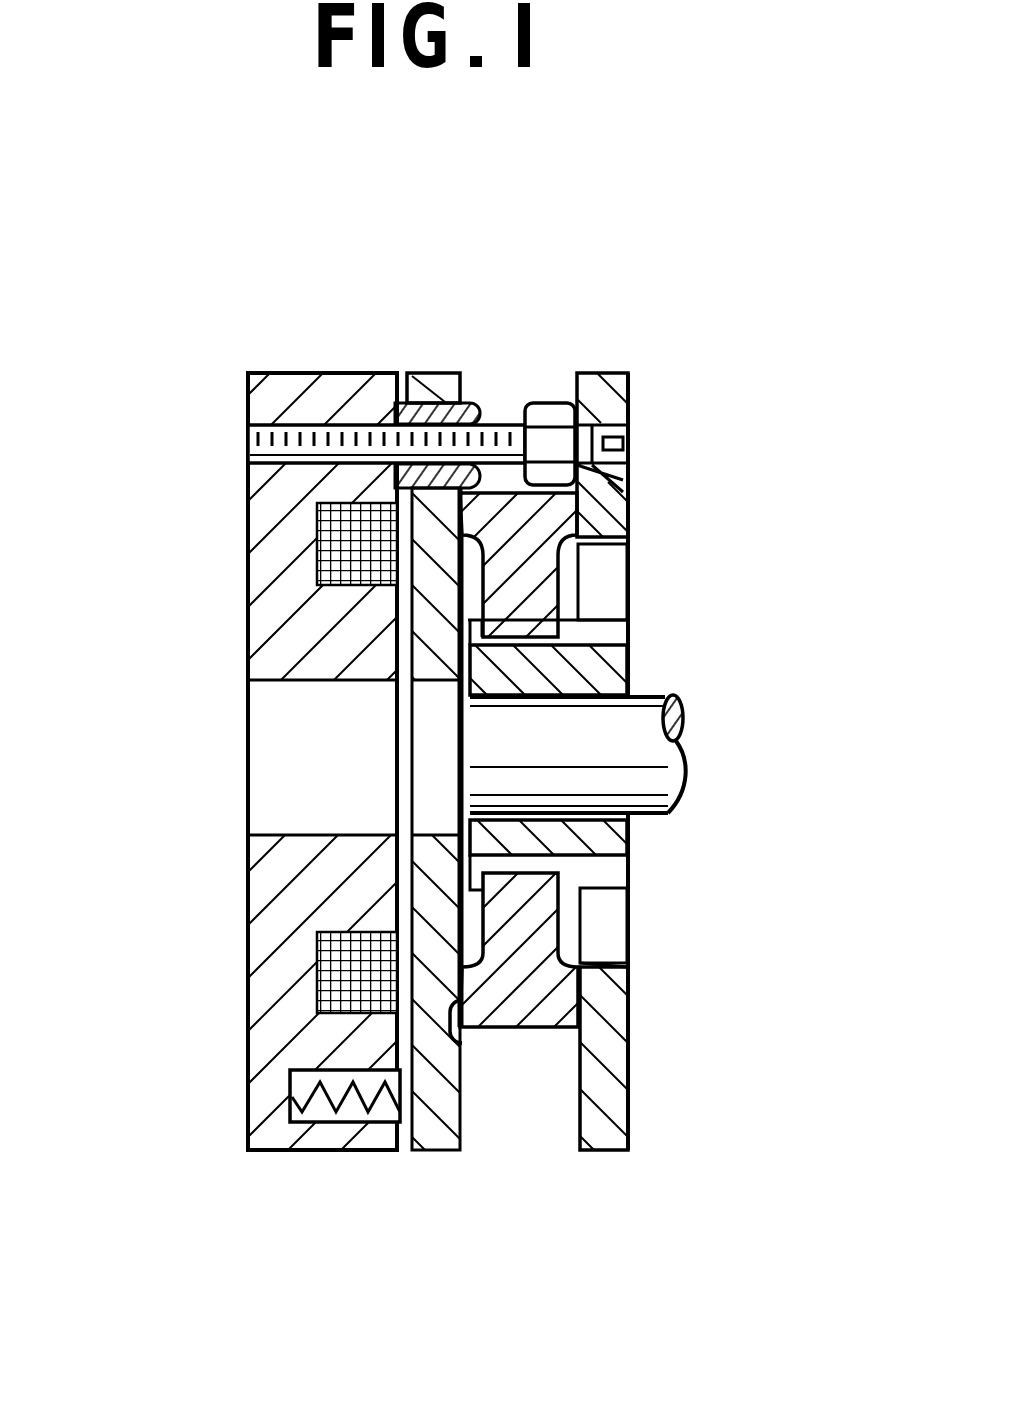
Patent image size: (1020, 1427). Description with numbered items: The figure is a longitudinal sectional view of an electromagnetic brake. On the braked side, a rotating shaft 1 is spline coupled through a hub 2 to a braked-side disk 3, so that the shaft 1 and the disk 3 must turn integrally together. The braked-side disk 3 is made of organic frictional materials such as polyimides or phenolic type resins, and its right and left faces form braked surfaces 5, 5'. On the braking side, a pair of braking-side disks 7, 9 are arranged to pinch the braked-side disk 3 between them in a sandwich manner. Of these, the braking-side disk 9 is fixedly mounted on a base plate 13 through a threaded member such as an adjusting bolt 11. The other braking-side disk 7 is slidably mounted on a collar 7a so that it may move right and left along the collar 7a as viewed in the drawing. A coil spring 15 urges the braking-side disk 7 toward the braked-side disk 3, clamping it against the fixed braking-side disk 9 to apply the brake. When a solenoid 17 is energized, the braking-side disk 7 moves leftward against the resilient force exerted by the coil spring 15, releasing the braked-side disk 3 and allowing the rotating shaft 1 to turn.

The rotating shaft 1 is at (643, 750).
The hub 2 is at (612, 660).
The braked-side disk 3 is at (540, 920).
The braked surface 5 is at (496, 861).
The braked surface 5' is at (666, 1012).
The braking-side disk 7 is at (440, 1123).
The collar 7a is at (477, 405).
The braking-side disk 9 is at (597, 1110).
The adjusting bolt 11 is at (516, 412).
The base plate 13 is at (338, 398).
The coil spring 15 is at (318, 1127).
The solenoid 17 is at (333, 545).